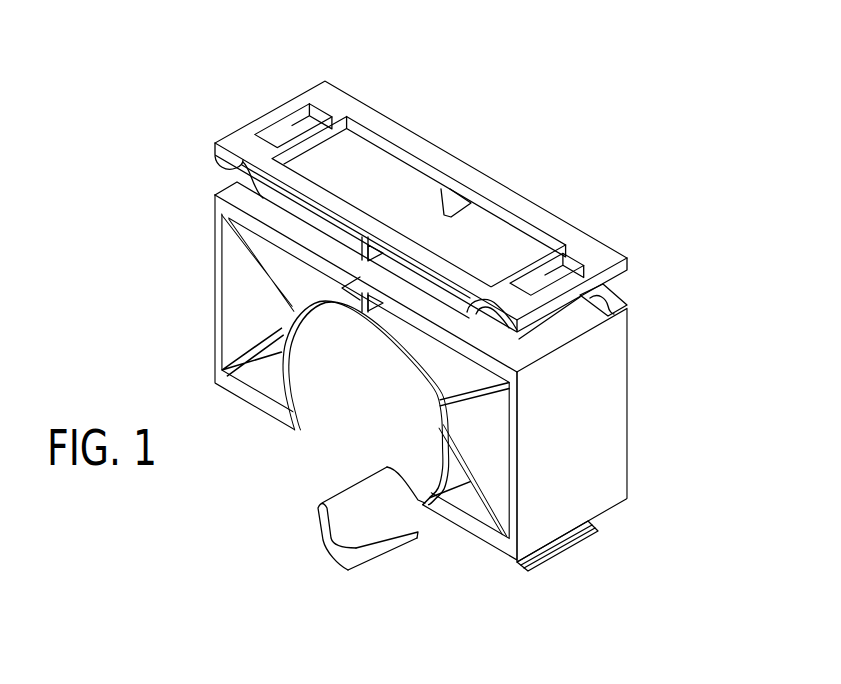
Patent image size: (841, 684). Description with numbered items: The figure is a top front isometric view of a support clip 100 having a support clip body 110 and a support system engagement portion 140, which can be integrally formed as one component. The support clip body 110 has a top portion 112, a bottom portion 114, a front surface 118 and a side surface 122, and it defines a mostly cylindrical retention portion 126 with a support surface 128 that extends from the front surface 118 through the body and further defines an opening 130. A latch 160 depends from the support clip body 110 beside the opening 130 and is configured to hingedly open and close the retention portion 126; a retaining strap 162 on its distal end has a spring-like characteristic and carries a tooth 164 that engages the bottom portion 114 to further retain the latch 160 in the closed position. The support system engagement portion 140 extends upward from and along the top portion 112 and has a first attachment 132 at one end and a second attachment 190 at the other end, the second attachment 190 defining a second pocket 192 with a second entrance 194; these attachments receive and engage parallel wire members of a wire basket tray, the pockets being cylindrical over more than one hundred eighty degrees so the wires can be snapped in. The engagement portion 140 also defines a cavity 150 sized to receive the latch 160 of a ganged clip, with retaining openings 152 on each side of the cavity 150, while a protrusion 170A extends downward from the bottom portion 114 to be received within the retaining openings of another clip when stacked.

The support clip 100 is at (608, 48).
The support clip body 110 is at (185, 290).
The top portion 112 is at (232, 187).
The bottom portion 114 is at (467, 533).
The front surface 118 is at (218, 203).
The side surface 122 is at (613, 367).
The retention portion 126 is at (288, 353).
The support surface 128 is at (328, 383).
The opening 130 is at (358, 505).
The first attachment 132 is at (178, 113).
The support system engagement portion 140 is at (447, 95).
The cavity 150 is at (462, 232).
The retaining openings 152 is at (275, 127).
The latch 160 is at (397, 568).
The retaining strap 162 is at (337, 563).
The tooth 164 is at (320, 524).
The protrusion 170A is at (578, 532).
The second attachment 190 is at (660, 262).
The second pocket 192 is at (603, 287).
The second entrance 194 is at (570, 312).